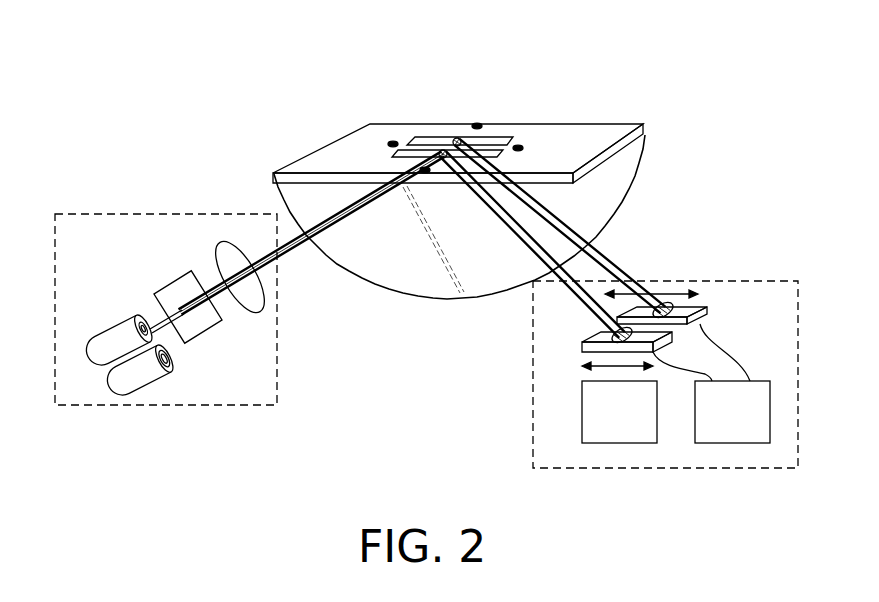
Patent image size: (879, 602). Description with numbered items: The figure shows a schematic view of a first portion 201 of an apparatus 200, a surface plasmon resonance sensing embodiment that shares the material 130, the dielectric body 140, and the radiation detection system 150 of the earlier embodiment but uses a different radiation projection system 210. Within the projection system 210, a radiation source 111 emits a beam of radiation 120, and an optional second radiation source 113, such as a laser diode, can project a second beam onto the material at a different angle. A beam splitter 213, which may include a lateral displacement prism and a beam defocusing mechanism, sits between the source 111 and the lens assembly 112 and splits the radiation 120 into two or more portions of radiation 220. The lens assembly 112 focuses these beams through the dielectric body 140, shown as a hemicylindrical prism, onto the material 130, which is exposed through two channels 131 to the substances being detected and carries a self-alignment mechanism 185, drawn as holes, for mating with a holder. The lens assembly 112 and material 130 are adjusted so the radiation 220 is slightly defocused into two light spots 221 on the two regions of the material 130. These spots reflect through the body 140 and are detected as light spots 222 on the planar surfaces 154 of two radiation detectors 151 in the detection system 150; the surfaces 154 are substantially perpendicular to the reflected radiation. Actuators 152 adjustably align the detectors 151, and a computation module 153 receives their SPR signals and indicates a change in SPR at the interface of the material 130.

The first portion 201 is at (726, 139).
The radiation projection system 210 is at (95, 406).
The radiation source 111 is at (120, 333).
The second radiation source 113 is at (143, 383).
The beam of radiation 120 is at (172, 334).
The beam splitter 213 is at (172, 284).
The lens assembly 112 is at (220, 240).
The portions of radiation 220 is at (272, 242).
The dielectric body 140 is at (369, 284).
The material 130 is at (343, 143).
The self-alignment mechanism 185 is at (387, 136).
The channels 131 is at (507, 147).
The light spots 221 is at (440, 150).
The radiation detection system 150 is at (631, 378).
The apparatus 200 is at (637, 527).
The radiation detectors 151 is at (653, 348).
The light spots 222 is at (634, 330).
The planar surfaces 154 is at (618, 318).
The actuators 152 is at (640, 424).
The computation module 153 is at (753, 424).